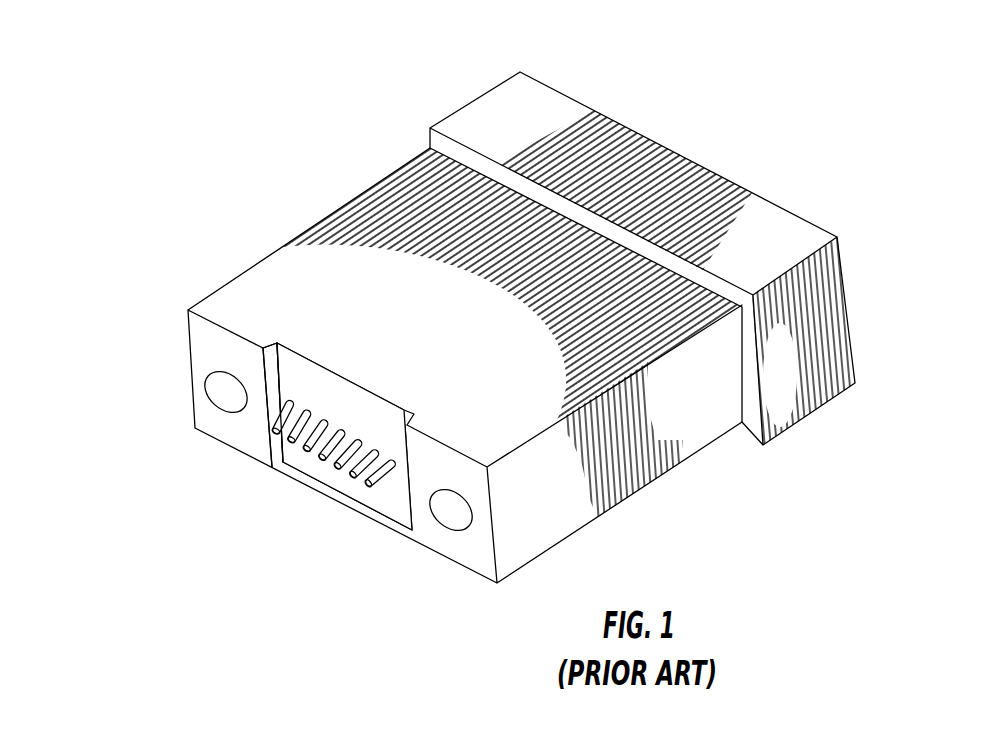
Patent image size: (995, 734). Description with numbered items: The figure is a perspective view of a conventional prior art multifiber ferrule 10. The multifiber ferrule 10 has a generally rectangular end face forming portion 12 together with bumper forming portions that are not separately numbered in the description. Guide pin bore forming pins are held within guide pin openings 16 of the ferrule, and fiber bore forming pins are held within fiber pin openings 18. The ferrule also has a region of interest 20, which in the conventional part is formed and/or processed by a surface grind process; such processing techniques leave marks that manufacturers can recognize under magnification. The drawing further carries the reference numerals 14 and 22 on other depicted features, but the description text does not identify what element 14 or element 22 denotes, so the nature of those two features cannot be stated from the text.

The multifiber ferrule 10 is at (446, 333).
The end face forming portion 12 is at (390, 399).
The heat sink 14 is at (594, 108).
The guide pin openings 16 is at (220, 386).
The fiber pin openings 18 is at (217, 420).
The region of interest 20 is at (356, 415).
The connector pins 22 is at (277, 403).